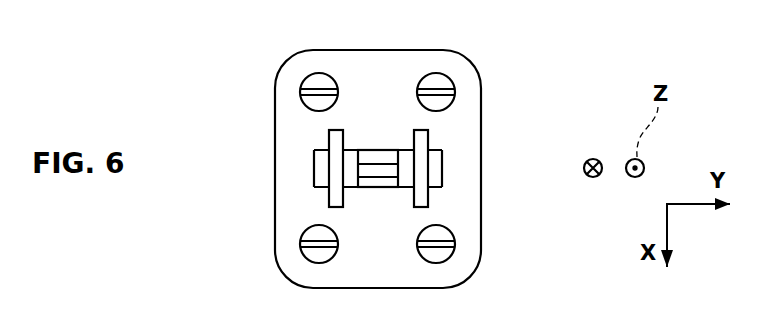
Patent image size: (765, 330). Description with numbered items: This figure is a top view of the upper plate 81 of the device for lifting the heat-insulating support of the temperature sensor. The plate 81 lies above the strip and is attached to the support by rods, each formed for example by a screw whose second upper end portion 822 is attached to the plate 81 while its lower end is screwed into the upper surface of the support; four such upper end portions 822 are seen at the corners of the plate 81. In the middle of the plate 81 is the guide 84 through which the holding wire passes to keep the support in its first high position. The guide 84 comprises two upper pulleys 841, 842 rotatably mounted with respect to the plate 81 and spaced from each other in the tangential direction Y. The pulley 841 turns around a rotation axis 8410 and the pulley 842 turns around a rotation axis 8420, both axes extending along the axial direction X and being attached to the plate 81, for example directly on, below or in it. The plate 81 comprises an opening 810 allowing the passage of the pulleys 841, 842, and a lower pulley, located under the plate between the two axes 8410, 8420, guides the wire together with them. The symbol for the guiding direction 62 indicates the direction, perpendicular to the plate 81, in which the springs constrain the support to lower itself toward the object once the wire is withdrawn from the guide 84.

The upper plate 81 is at (294, 213).
The second upper end portion 822 is at (447, 78).
The guide 84 is at (377, 163).
The first upper pulley 841 is at (323, 177).
The first upper pulley 842 is at (432, 177).
The opening 810 is at (377, 157).
The rotation axis 8410 is at (336, 168).
The rotation axis 8420 is at (420, 168).
The guiding direction 62 is at (595, 157).